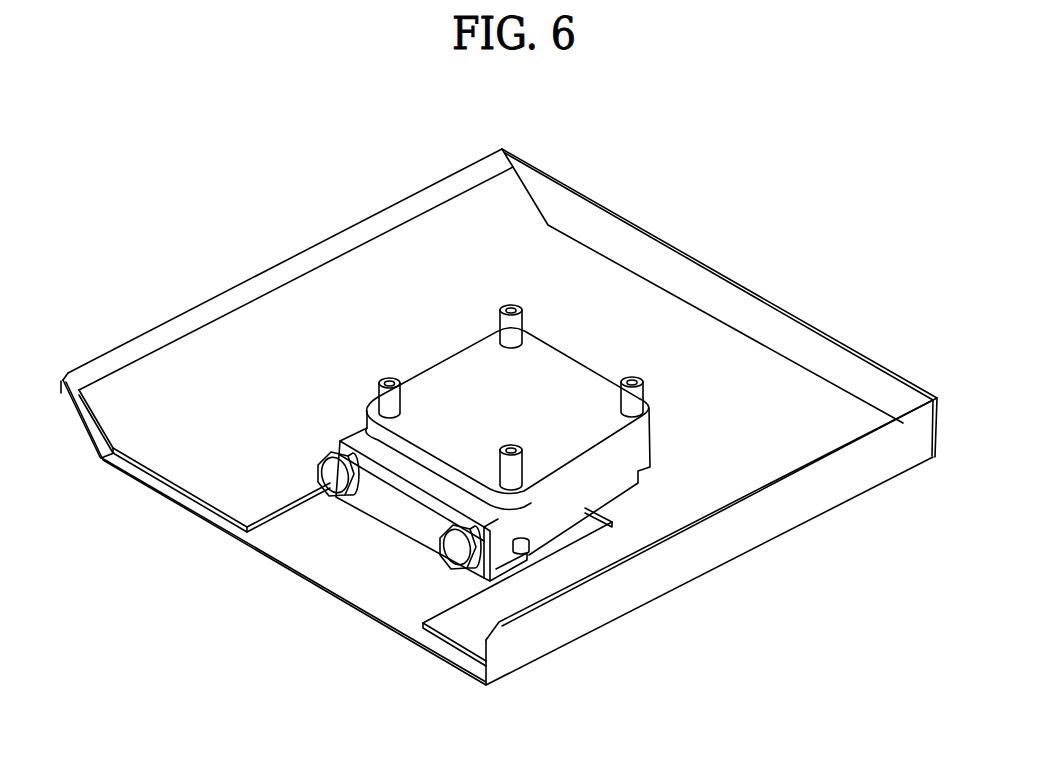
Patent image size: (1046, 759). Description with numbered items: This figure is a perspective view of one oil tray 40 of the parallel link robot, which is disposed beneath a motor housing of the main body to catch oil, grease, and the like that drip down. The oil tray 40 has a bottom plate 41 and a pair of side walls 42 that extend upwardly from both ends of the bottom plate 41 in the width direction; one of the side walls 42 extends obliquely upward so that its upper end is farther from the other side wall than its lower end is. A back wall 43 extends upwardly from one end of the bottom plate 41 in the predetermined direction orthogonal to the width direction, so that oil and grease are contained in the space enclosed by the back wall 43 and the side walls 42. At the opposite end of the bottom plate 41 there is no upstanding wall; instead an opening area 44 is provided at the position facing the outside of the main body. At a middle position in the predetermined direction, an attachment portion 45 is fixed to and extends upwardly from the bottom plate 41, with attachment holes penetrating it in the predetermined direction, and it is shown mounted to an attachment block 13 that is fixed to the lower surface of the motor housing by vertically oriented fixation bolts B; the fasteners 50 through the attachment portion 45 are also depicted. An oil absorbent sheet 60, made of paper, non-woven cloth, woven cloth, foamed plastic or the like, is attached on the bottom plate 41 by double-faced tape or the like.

The attachment block 13 is at (540, 357).
The oil tray 40 is at (502, 399).
The bottom plate 41 is at (313, 517).
The side wall 42 is at (400, 212).
The back wall 43 is at (702, 292).
The opening area 44 is at (297, 563).
The attachment portion 45 is at (397, 523).
The bolt 50 is at (320, 476).
The oil absorbent sheet 60 is at (197, 467).
The fixation bolt B is at (508, 306).